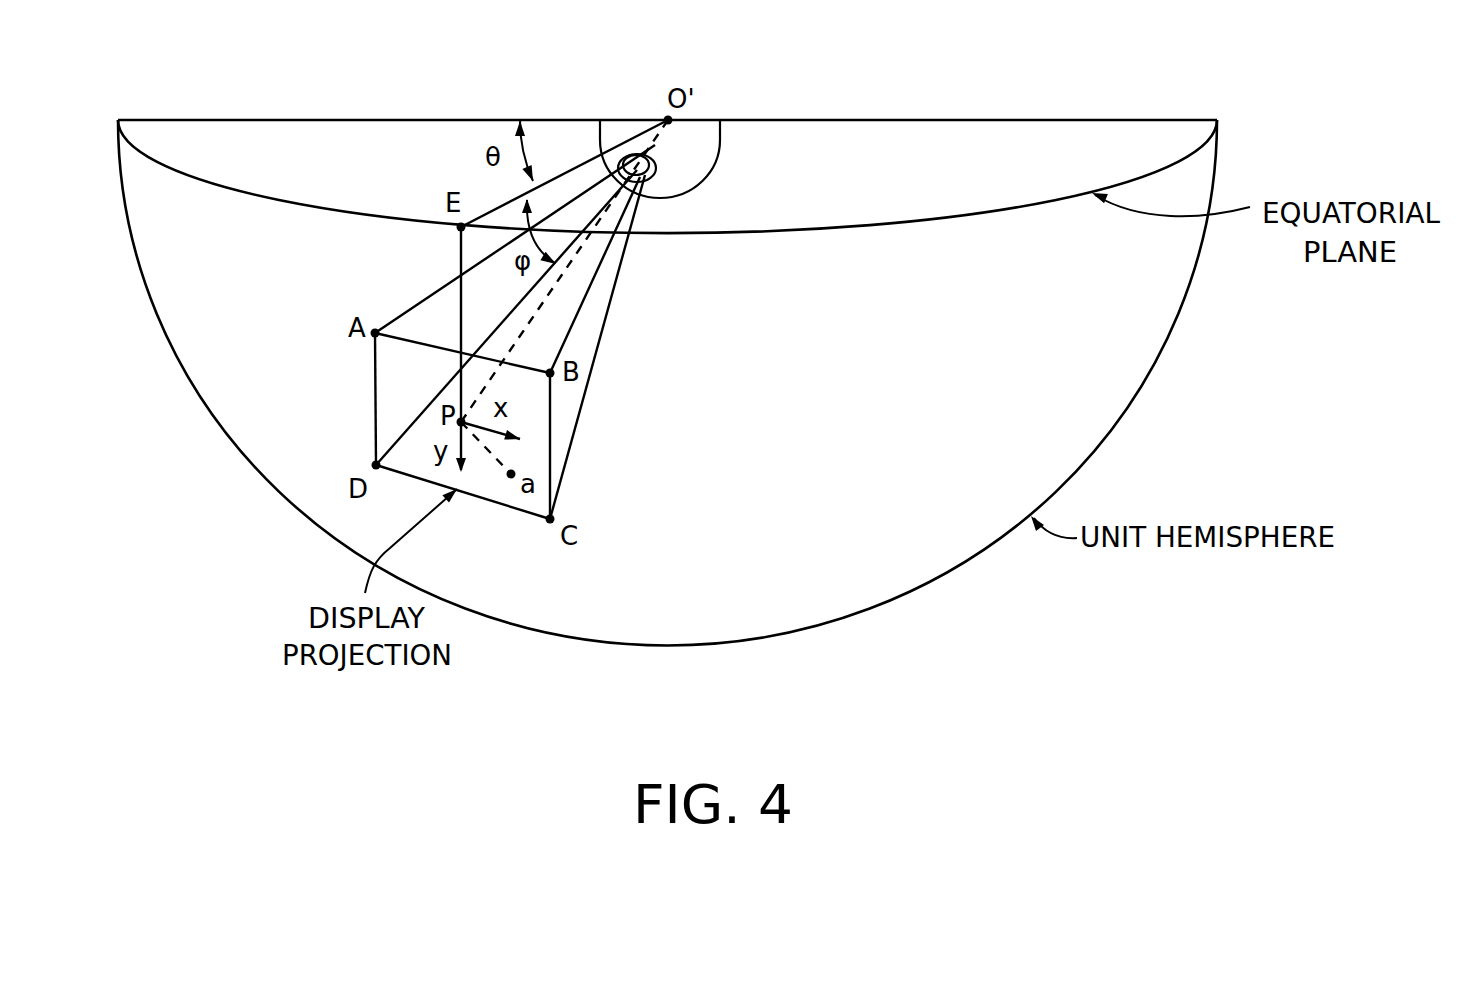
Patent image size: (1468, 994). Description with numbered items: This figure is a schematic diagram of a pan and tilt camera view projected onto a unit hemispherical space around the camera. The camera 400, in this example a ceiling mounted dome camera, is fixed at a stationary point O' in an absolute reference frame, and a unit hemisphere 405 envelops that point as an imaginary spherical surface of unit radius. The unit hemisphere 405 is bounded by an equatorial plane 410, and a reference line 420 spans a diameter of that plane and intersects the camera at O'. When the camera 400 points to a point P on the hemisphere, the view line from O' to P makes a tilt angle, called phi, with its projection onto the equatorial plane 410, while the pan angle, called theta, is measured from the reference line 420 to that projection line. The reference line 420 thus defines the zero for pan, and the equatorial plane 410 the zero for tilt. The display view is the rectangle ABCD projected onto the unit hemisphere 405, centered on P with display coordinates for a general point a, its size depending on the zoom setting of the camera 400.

The camera 400 is at (722, 148).
The unit hemisphere 405 is at (1118, 425).
The equatorial plane 410 is at (1020, 208).
The reference line 420 is at (888, 118).